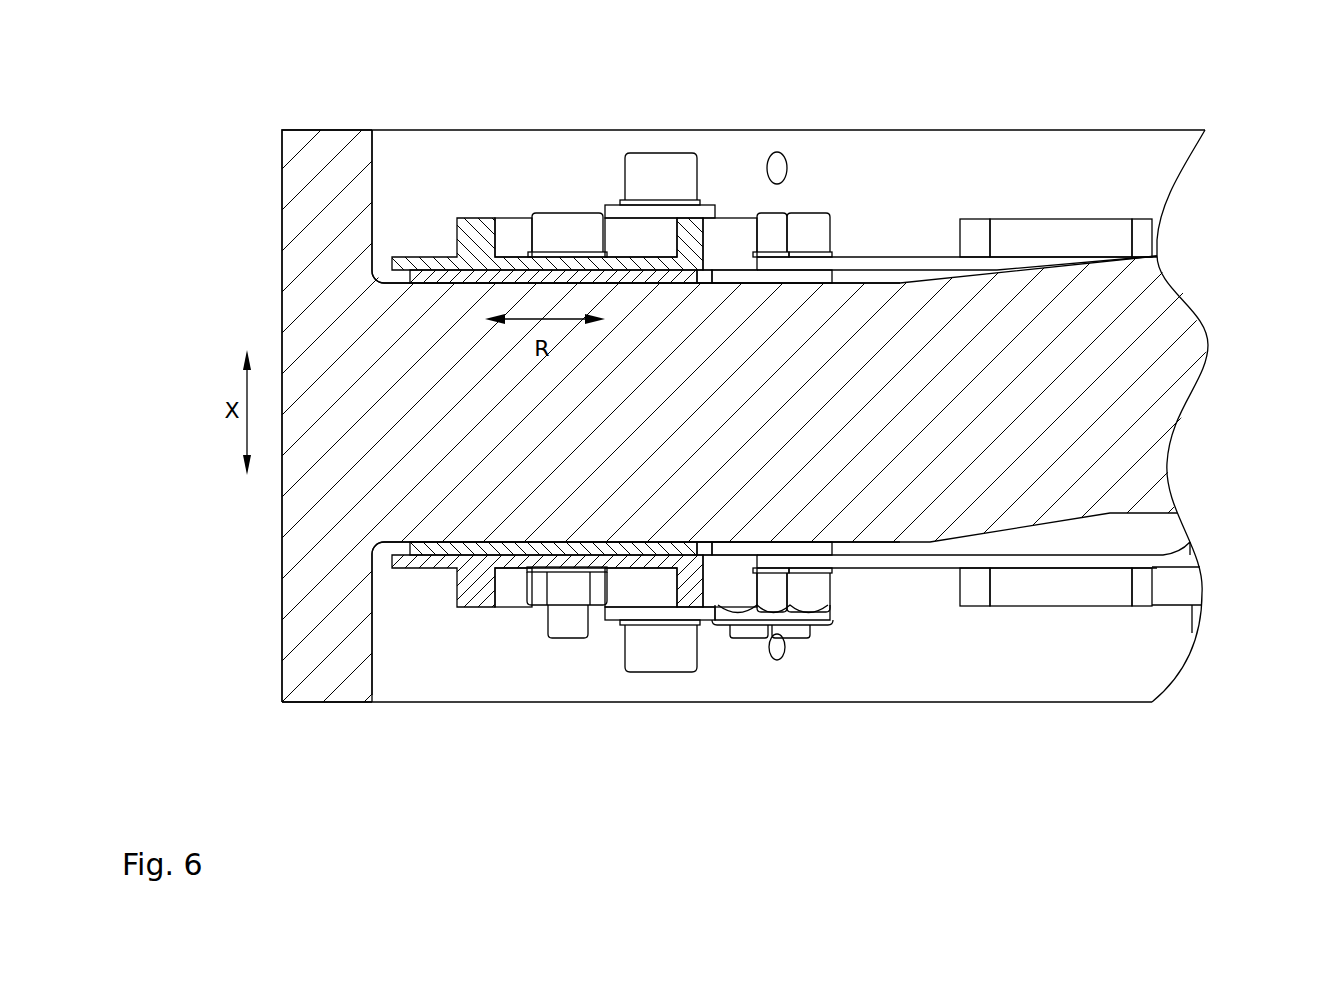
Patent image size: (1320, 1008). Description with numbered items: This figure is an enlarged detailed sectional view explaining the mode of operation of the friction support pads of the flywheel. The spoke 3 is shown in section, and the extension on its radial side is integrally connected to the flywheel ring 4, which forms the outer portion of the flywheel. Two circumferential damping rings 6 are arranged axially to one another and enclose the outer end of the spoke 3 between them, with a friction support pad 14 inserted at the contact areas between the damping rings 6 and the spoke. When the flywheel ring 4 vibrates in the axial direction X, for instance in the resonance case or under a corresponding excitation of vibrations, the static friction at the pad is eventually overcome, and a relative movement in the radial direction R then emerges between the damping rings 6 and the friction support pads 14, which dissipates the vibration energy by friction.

The spoke 3 is at (1190, 378).
The flywheel ring 4 is at (282, 272).
The damping ring 6 is at (413, 263).
The friction support pad 14 is at (512, 272).